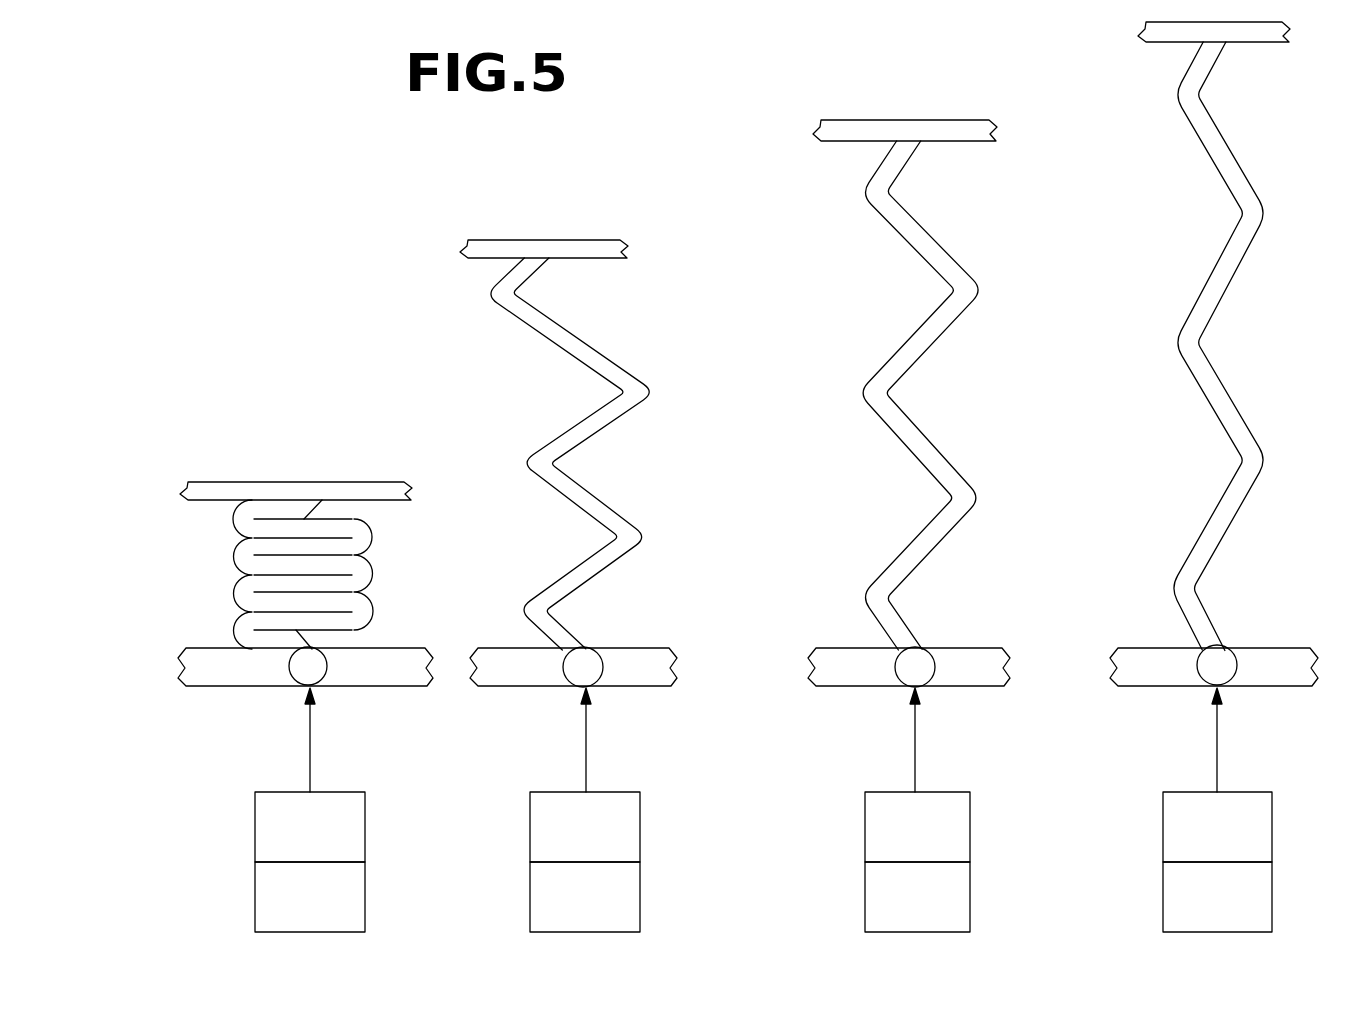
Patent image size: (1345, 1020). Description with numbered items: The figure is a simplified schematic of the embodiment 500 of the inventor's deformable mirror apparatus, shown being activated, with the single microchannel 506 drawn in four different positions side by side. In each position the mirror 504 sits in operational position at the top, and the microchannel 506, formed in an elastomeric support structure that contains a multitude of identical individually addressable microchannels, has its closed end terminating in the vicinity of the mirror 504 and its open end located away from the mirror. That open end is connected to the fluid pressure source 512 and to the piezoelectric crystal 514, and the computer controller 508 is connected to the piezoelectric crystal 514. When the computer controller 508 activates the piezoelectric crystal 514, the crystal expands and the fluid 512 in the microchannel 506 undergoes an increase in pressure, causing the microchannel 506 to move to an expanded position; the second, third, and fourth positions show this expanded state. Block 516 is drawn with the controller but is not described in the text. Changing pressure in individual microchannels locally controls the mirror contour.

The embodiment of the apparatus 500 is at (352, 200).
The mirror 504 is at (313, 483).
The microchannel 506 is at (233, 556).
The computer controller 508 is at (332, 912).
The fluid pressure source 512 is at (204, 648).
The piezoelectric crystal 514 is at (292, 684).
The actuator 516 is at (332, 840).